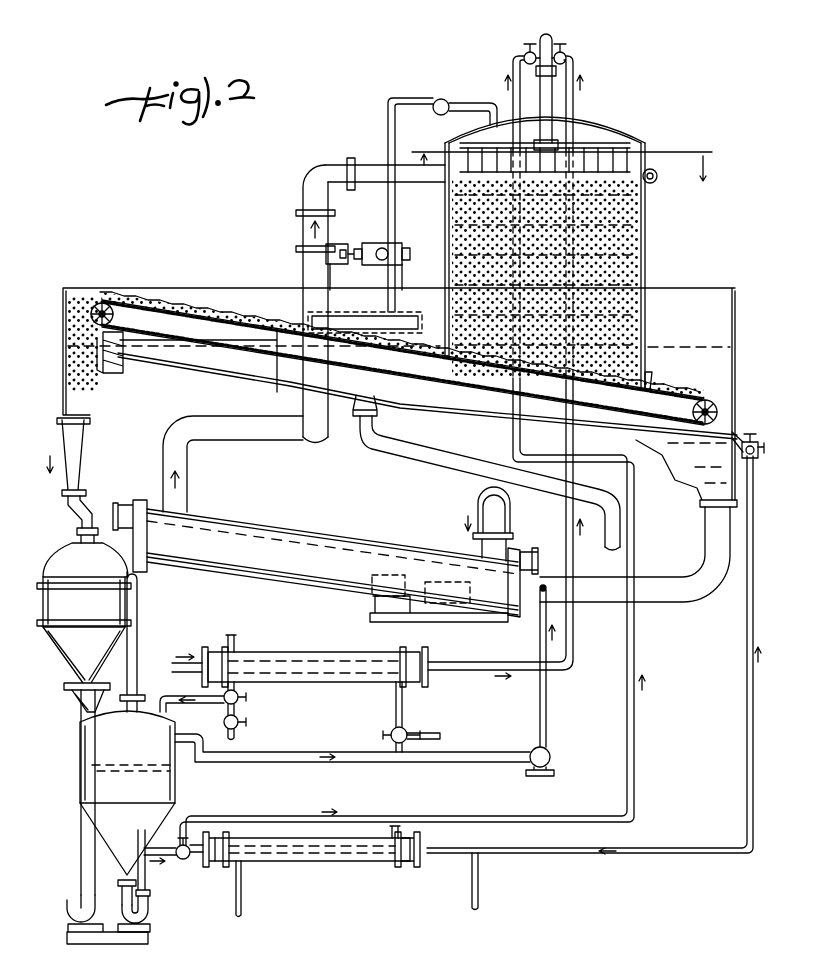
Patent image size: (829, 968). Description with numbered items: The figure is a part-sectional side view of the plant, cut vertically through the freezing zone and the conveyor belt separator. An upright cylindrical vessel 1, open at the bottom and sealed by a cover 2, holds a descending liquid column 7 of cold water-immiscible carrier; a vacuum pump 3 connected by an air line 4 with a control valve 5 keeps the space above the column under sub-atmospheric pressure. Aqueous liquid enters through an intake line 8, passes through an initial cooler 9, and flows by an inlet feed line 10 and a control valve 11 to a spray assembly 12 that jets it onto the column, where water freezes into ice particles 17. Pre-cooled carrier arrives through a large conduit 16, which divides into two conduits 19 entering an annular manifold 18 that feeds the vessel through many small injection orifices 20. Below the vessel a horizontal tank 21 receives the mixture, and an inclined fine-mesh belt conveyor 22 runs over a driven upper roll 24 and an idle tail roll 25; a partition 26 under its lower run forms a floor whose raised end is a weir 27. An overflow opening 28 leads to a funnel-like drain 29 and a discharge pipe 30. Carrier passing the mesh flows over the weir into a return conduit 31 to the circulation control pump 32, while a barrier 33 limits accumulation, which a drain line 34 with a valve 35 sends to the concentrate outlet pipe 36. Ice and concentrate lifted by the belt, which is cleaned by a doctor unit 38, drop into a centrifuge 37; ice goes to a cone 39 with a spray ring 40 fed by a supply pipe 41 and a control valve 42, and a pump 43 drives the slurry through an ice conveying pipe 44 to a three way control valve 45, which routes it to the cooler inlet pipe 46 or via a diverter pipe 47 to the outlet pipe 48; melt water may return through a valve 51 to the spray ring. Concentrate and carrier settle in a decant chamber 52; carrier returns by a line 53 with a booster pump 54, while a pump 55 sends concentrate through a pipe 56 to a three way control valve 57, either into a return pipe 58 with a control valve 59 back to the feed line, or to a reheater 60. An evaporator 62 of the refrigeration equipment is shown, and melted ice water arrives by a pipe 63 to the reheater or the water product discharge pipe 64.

The vessel 1 is at (648, 232).
The cover 2 is at (553, 104).
The vacuum pump 3 is at (398, 255).
The air line 4 is at (387, 122).
The control valve 5 is at (440, 99).
The column 7 is at (626, 279).
The aqueous liquid intake line 8 is at (190, 674).
The initial cooler 9 is at (291, 652).
The inlet feed line 10 is at (575, 72).
The control valve 11 is at (565, 52).
The spray assembly 12 is at (608, 148).
The conduit 16 is at (302, 189).
The ice particles 17 is at (446, 207).
The annular manifold 18 is at (658, 176).
The conduits 19 is at (365, 165).
The injection orifices 20 is at (648, 191).
The tank 21 is at (222, 287).
The belt conveyor 22 is at (165, 298).
The upper roll 24 is at (105, 303).
The tail roll 25 is at (717, 412).
The partition 26 is at (238, 370).
The weir 27 is at (178, 355).
The overflow opening 28 is at (402, 318).
The drain 29 is at (378, 414).
The discharge pipe 30 is at (612, 550).
The return conduit 31 is at (648, 588).
The circulation control pump 32 is at (490, 620).
The barrier 33 is at (650, 378).
The drain line 34 is at (754, 521).
The valve 35 is at (760, 440).
The final liquid concentrate outlet pipe 36 is at (479, 896).
The centrifuge 37 is at (62, 568).
The doctor unit 38 is at (116, 375).
The cone 39 is at (60, 647).
The fresh water spray ring 40 is at (72, 696).
The supply pipe 41 is at (238, 739).
The control valve 42 is at (238, 718).
The pump 43 is at (66, 915).
The ice conveying pipe 44 is at (80, 874).
The three way control valve 45 is at (408, 741).
The inlet pipe 46 is at (403, 714).
The diverter pipe 47 is at (433, 736).
The outlet pipe 48 is at (236, 641).
The valve 51 is at (240, 695).
The decant chamber 52 is at (110, 745).
The line 53 is at (547, 719).
The booster pump 54 is at (551, 756).
The pump 55 is at (144, 918).
The pipe 56 is at (138, 885).
The three way control valve 57 is at (188, 862).
The return pipe 58 is at (513, 66).
The control valve 59 is at (524, 56).
The reheater 60 is at (330, 862).
The evaporator 62 is at (335, 540).
The pipe 63 is at (401, 830).
The water product discharge pipe 64 is at (242, 912).